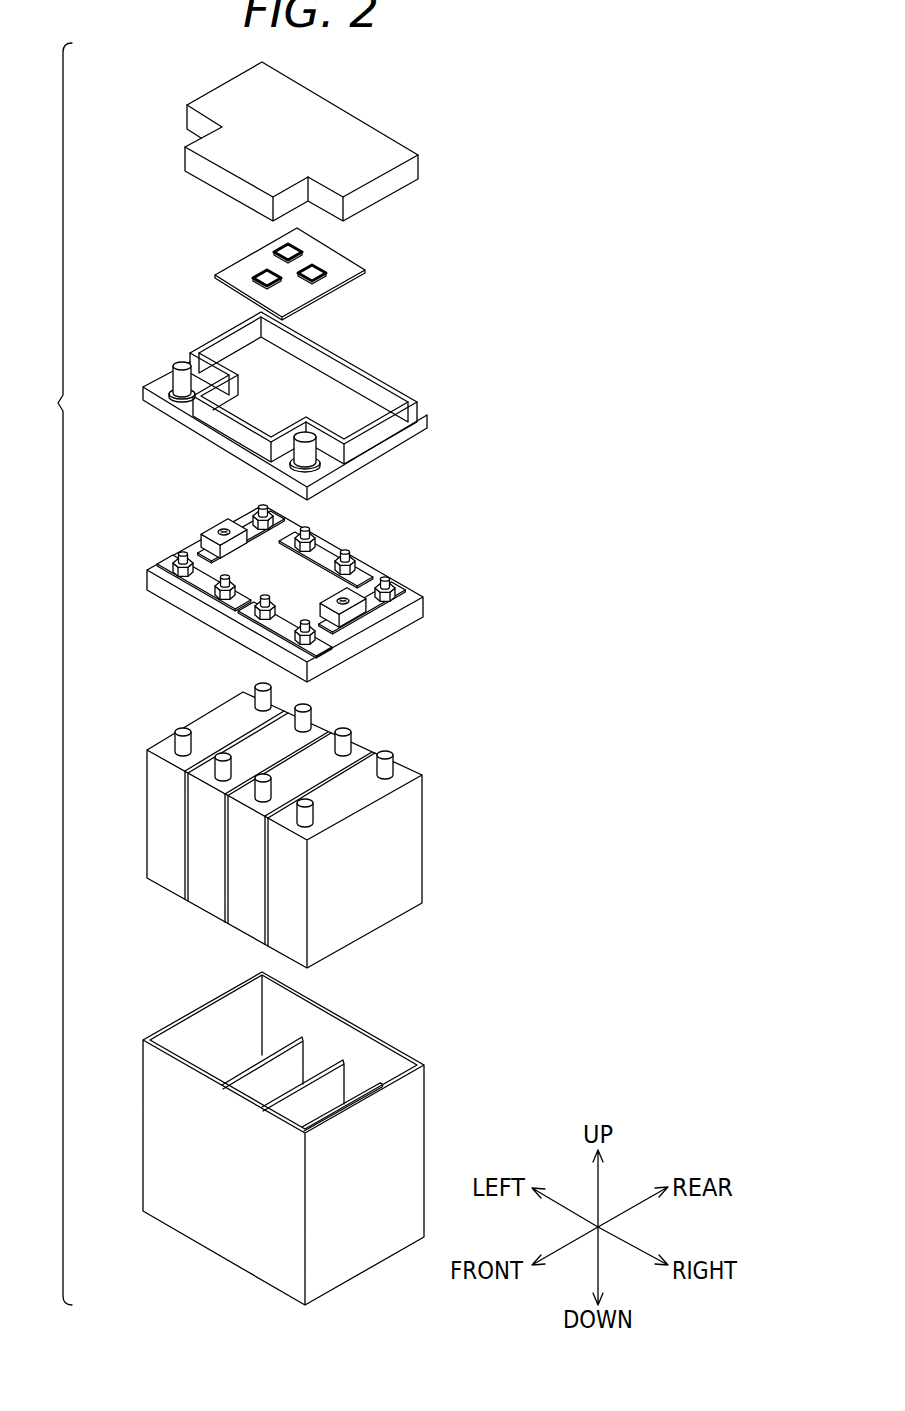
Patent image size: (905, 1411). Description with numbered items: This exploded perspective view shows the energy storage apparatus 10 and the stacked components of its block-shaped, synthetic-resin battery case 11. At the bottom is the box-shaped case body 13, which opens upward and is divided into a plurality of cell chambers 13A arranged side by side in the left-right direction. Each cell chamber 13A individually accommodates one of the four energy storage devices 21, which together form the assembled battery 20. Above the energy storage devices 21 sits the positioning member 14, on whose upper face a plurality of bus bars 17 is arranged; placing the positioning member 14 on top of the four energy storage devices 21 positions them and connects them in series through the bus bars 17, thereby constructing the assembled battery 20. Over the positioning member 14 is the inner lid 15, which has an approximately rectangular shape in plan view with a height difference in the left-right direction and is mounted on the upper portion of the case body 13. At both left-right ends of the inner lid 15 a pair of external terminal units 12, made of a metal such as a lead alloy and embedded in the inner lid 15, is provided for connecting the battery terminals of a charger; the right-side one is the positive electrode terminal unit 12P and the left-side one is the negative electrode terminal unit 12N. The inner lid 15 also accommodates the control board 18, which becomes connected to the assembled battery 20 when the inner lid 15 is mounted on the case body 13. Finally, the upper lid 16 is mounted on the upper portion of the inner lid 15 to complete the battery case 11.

The energy storage apparatus 10 is at (306, 674).
The battery case 11 is at (321, 683).
The external terminal units 12 is at (270, 357).
The negative electrode terminal unit 12N is at (182, 363).
The positive electrode terminal unit 12P is at (305, 434).
The case body 13 is at (302, 1138).
The cell chambers 13A is at (292, 1105).
The positioning member 14 is at (343, 582).
The inner lid 15 is at (335, 371).
The upper lid 16 is at (358, 128).
The bus bars 17 is at (245, 525).
The control board 18 is at (325, 265).
The assembled battery 20 is at (349, 825).
The energy storage devices 21 is at (167, 820).